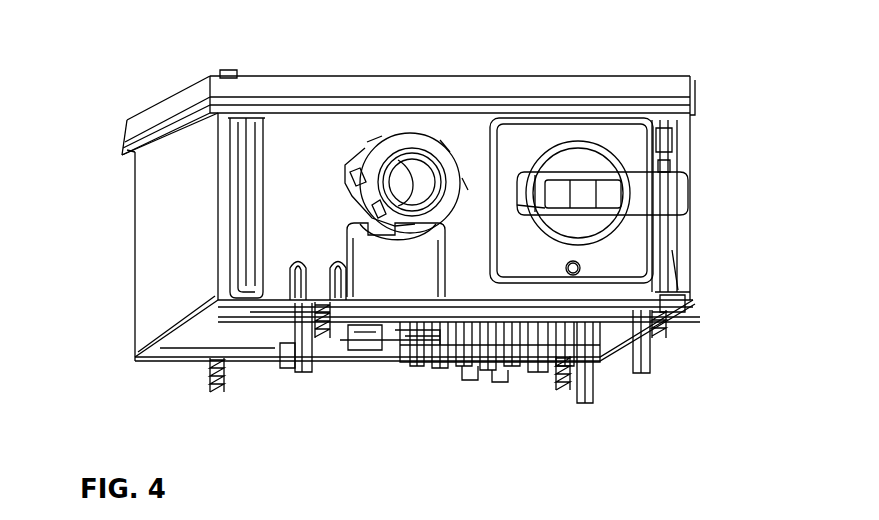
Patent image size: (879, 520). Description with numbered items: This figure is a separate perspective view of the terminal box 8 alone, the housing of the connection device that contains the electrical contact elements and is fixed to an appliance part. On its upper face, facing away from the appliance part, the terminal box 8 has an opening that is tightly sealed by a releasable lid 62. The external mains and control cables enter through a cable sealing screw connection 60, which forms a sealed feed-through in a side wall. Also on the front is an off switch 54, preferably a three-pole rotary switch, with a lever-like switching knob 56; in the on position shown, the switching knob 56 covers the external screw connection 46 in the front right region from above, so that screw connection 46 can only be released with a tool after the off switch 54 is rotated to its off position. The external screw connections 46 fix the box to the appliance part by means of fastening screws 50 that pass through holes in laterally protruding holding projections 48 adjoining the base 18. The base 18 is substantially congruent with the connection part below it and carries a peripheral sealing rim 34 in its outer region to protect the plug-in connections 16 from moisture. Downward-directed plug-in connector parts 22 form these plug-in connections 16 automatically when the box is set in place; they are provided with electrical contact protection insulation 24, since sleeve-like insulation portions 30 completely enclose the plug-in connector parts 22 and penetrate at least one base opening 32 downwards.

The terminal box 8 is at (122, 231).
The electrical plug-in connections 16 is at (438, 386).
The base 18 is at (332, 342).
The plug-in connector parts 22 is at (498, 372).
The electrical contact protection insulation 24 is at (425, 362).
The insulation portions 30 is at (460, 372).
The base opening 32 is at (412, 352).
The peripheral sealing rim 34 is at (160, 360).
The external screw connections 46 is at (682, 286).
The holding projections 48 is at (293, 274).
The fastening screws 50 is at (323, 290).
The off switch 54 is at (629, 138).
The switching knob 56 is at (690, 188).
The cable sealing screw connection 60 is at (424, 136).
The lid 62 is at (322, 78).